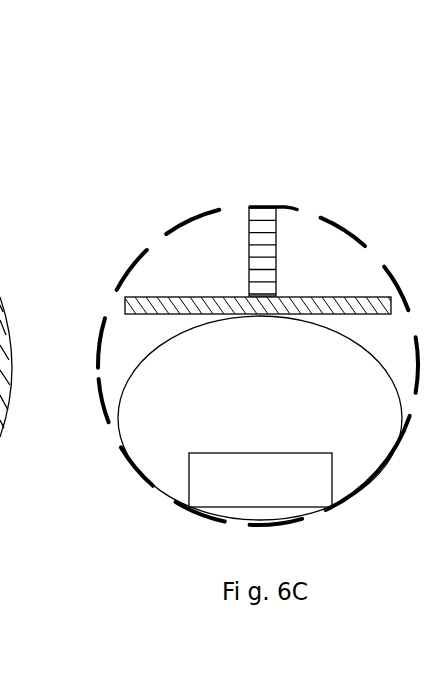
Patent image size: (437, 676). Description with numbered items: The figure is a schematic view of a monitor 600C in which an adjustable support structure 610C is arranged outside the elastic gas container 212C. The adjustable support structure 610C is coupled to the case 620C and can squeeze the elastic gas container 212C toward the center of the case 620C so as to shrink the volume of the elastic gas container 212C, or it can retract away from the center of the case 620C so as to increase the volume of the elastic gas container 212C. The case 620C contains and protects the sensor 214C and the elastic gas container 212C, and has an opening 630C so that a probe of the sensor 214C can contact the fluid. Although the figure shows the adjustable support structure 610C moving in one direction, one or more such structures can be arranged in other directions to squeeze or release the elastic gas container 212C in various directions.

The monitor 600C is at (158, 63).
The adjustable support structure 610C is at (247, 243).
The case 620C is at (97, 327).
The opening 630C is at (117, 450).
The elastic gas container 212C is at (275, 402).
The sensor 214C is at (278, 498).